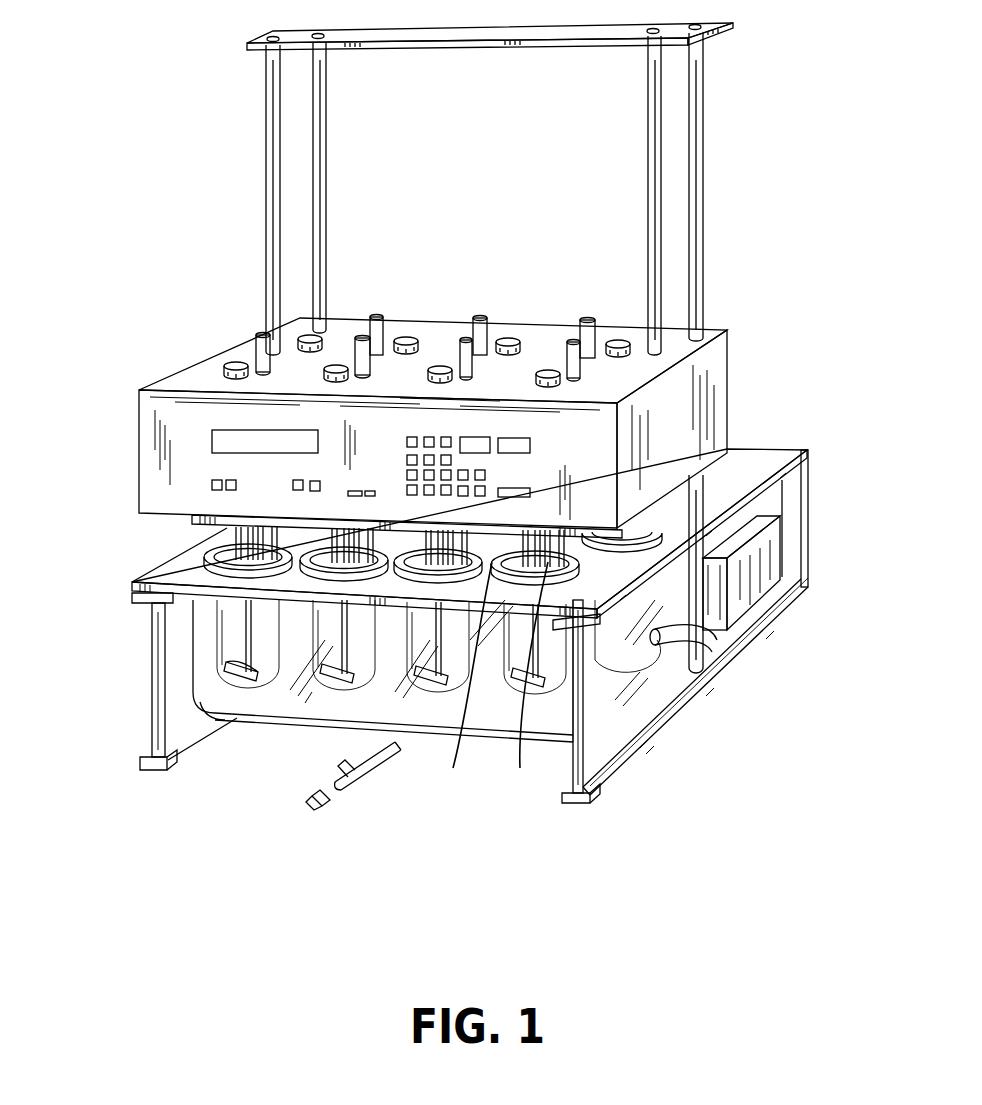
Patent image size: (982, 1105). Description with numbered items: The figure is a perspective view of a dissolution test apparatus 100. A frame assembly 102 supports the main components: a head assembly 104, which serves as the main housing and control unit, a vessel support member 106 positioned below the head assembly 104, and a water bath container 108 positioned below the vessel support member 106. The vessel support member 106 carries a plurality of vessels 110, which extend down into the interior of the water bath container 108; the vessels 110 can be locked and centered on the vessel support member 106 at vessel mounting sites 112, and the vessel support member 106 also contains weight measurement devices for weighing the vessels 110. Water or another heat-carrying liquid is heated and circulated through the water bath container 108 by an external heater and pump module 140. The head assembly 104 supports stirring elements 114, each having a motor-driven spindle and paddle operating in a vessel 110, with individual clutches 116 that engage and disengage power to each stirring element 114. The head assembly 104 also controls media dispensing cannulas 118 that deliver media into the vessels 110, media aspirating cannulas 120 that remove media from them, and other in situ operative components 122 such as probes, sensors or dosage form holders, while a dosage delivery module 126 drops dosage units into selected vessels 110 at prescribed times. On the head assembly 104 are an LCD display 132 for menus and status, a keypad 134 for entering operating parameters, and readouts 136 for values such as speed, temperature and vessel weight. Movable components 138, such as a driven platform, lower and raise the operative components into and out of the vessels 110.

The dissolution test apparatus 100 is at (220, 166).
The frame assembly 102 is at (838, 438).
The head assembly 104 is at (723, 352).
The vessel support member 106 is at (132, 583).
The water bath container 108 is at (630, 700).
The vessels 110 is at (325, 688).
The vessel mounting sites 112 is at (421, 600).
The stirring elements 114 is at (250, 640).
The clutches 116 is at (226, 362).
The media dispensing cannulas 118 is at (460, 682).
The media aspirating cannulas 120 is at (523, 680).
The in situ operative components 122 is at (540, 549).
The dosage delivery module 126 is at (258, 348).
The LCD display 132 is at (212, 443).
The keypad 134 is at (406, 443).
The readouts 136 is at (528, 484).
The movable components 138 is at (192, 520).
The heater and pump module 140 is at (748, 608).